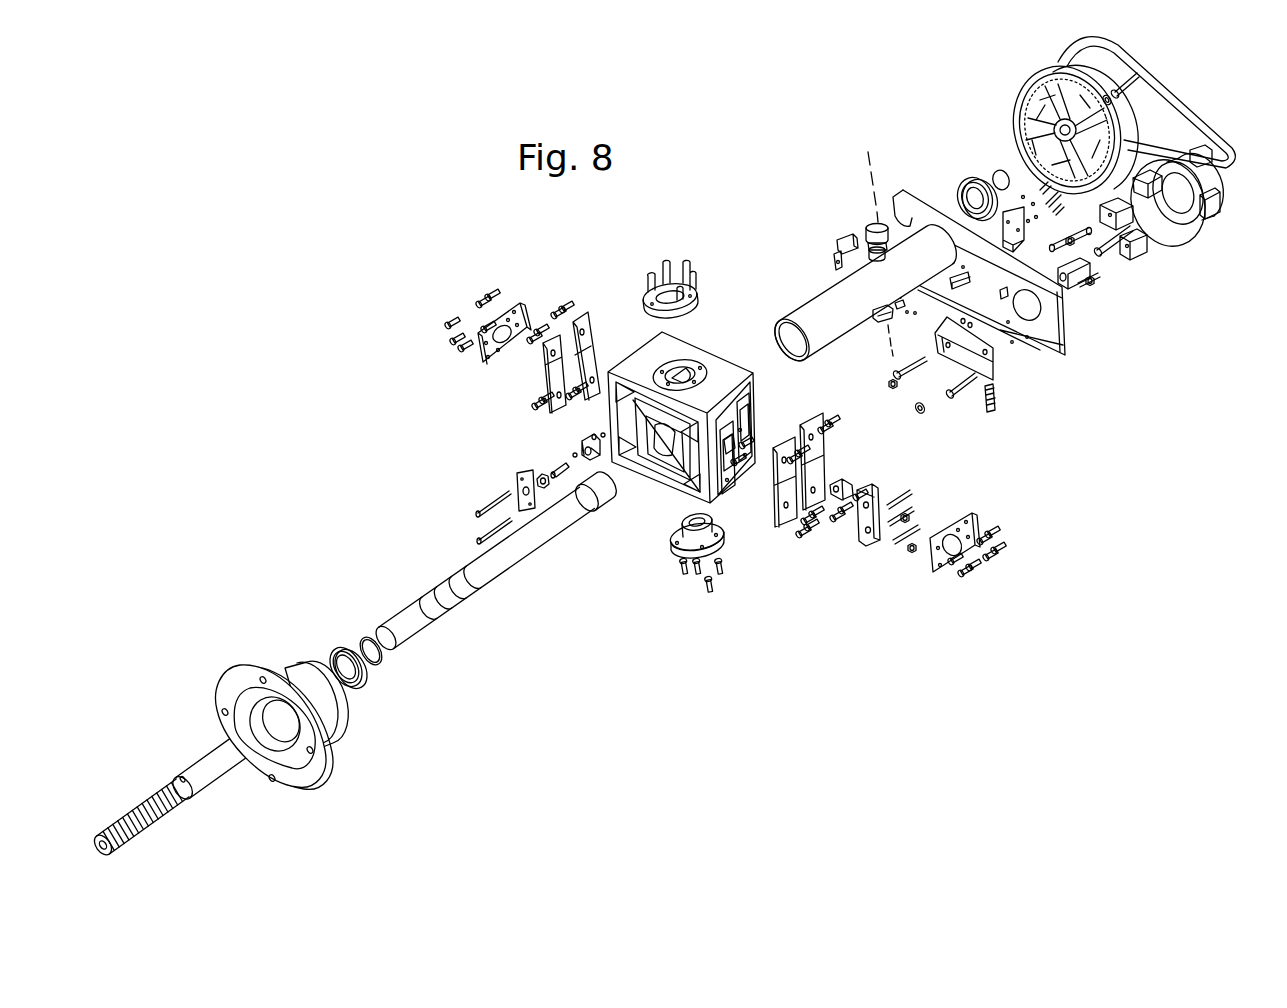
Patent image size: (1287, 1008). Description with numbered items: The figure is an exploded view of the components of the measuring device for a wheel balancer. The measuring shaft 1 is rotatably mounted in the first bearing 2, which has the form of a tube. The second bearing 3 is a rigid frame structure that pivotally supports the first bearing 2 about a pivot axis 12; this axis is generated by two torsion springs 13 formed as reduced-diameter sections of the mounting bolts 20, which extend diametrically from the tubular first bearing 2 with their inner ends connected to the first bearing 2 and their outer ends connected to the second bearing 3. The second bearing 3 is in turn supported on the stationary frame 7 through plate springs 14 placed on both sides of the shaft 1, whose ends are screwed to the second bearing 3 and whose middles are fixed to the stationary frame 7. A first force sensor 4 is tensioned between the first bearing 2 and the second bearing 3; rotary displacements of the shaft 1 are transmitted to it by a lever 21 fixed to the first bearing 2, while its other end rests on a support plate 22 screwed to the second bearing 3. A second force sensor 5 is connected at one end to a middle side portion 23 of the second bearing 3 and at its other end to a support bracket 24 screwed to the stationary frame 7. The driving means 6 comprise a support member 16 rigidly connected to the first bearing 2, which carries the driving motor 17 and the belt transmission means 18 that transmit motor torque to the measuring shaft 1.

The measuring shaft 1 is at (483, 577).
The first bearing 2 is at (830, 331).
The second bearing 3 is at (718, 365).
The first force sensor 4 is at (553, 463).
The second force sensor 5 is at (842, 487).
The driving means 6 is at (973, 100).
The stationary frame 7 is at (482, 350).
The pivot axis 12 is at (868, 161).
The torsion spring 13 is at (867, 237).
The plate spring 14 is at (588, 325).
The support member 16 is at (1050, 347).
The driving motor 17 is at (1188, 220).
The transmission means 18 is at (1117, 143).
The mounting bolt 20 is at (863, 252).
The lever 21 is at (837, 268).
The support plate 22 is at (515, 482).
The middle side portion 23 is at (732, 424).
The support bracket 24 is at (872, 520).